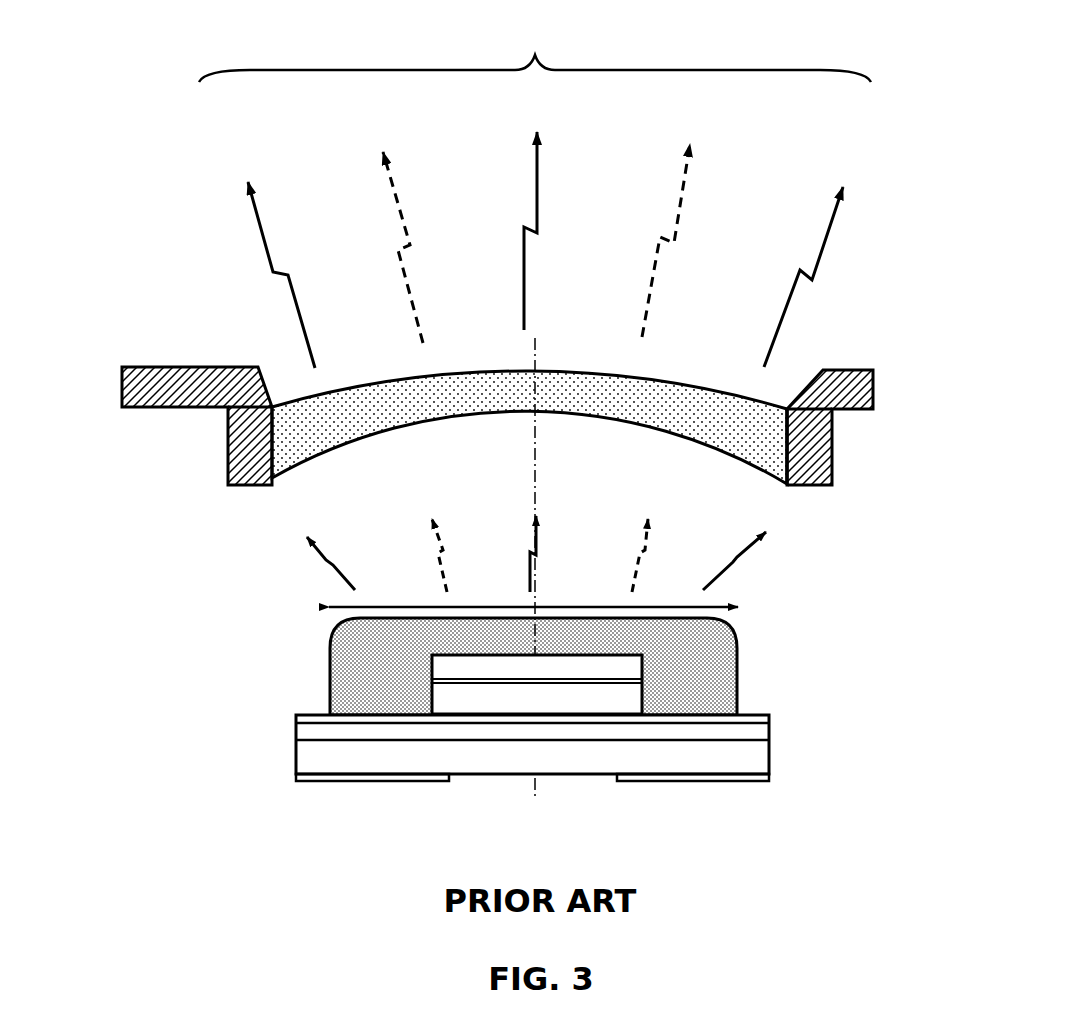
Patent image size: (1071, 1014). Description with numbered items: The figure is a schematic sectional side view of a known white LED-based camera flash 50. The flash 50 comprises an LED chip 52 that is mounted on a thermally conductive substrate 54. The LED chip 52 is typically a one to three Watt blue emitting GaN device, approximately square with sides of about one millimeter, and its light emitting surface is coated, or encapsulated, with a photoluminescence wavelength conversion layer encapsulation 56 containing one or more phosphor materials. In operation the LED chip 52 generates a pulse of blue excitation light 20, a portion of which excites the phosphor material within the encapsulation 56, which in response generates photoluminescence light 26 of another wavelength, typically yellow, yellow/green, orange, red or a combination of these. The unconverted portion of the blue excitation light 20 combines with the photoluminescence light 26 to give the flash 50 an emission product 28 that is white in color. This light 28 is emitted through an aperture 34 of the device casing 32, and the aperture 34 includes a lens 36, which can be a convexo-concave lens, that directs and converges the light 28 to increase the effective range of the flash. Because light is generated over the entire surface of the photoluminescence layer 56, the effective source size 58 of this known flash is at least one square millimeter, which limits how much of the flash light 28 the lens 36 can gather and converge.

The blue excitation light 20 is at (538, 223).
The photoluminescence light 26 is at (546, 229).
The light emission product 28 is at (535, 48).
The device casing 32 is at (182, 395).
The aperture 34 is at (796, 376).
The lens 36 is at (333, 407).
The LED-based camera flash 50 is at (542, 744).
The LED chip 52 is at (551, 663).
The thermally conductive substrate 54 is at (727, 765).
The photoluminescence wavelength conversion layer encapsulation 56 is at (717, 662).
The effective source size 58 is at (712, 606).